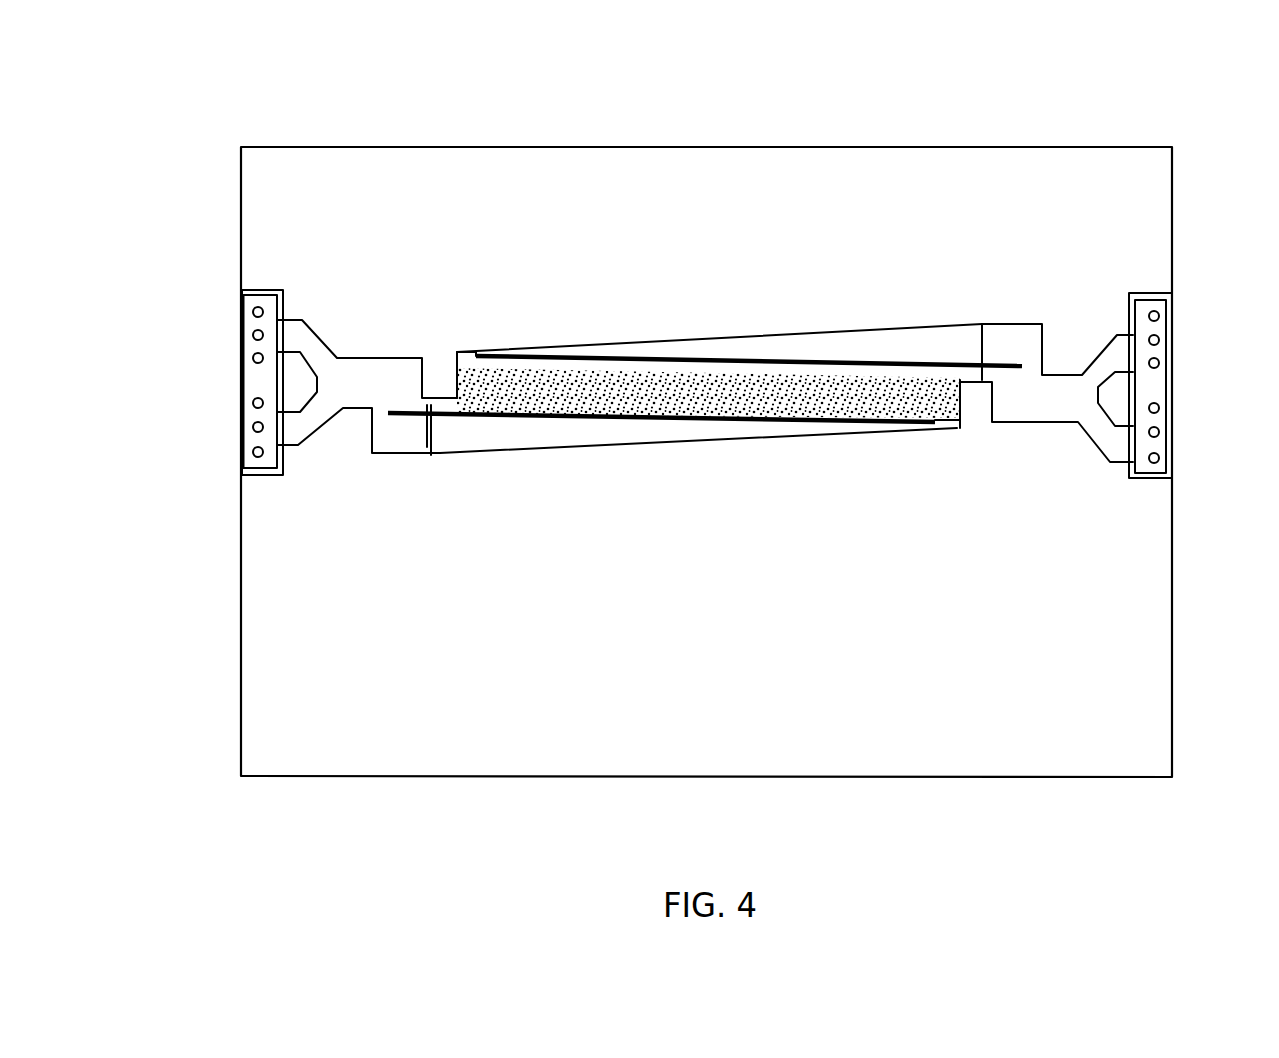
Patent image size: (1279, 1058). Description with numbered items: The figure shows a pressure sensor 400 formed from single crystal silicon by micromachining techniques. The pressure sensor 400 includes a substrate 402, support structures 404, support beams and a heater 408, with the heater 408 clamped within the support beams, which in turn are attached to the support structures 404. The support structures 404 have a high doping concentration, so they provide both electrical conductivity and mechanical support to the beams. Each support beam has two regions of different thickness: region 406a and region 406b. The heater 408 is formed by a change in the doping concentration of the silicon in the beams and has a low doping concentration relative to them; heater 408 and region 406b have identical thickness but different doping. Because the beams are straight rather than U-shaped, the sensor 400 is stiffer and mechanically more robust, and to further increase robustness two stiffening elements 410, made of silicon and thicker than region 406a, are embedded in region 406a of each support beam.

The pressure sensor 400 is at (1155, 132).
The substrate 402 is at (1172, 212).
The support structures 404 is at (253, 385).
The region of support beam 406a is at (362, 382).
The region of support beam 406b is at (873, 342).
The heater 408 is at (605, 383).
The stiffening elements 410 is at (637, 419).